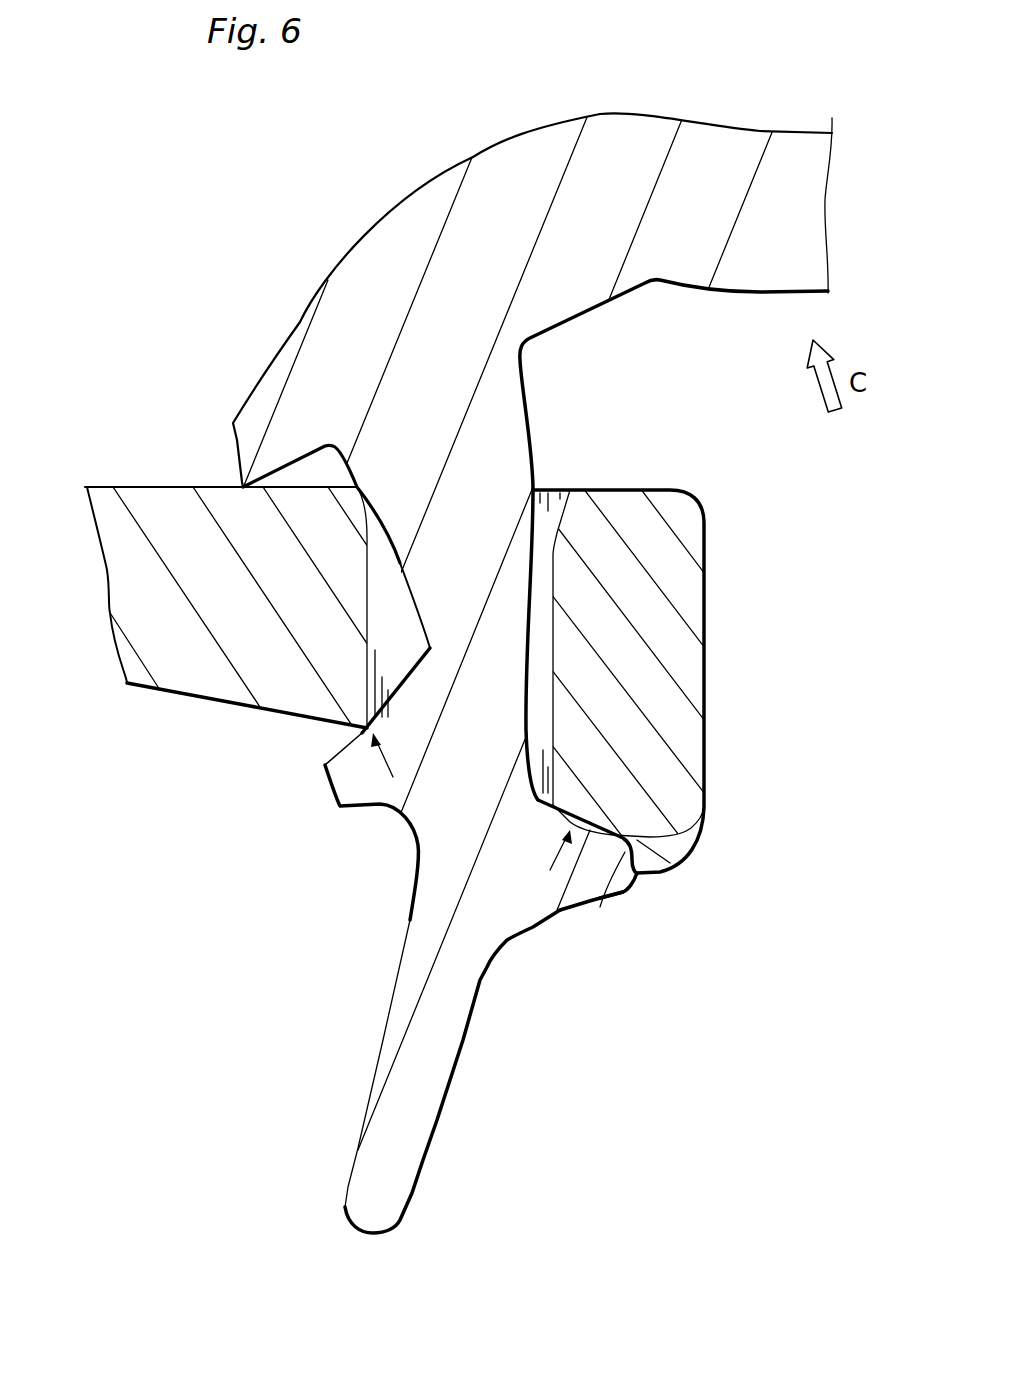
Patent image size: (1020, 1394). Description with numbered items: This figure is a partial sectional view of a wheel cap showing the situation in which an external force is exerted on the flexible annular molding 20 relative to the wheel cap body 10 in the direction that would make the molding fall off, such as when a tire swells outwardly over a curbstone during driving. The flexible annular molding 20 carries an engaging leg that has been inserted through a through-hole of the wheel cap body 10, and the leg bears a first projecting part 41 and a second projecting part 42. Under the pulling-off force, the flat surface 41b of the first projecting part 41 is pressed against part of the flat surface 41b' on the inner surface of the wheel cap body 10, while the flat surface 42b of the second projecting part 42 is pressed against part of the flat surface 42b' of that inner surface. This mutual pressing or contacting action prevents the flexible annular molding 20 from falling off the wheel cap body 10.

The flexible annular molding 20 is at (700, 82).
The wheel cap body 10 is at (74, 370).
The first projecting part 41 is at (325, 768).
The flat surface of first projecting part 41b is at (274, 780).
The flat surface of inner surface of wheel cap body 41b' is at (278, 705).
The second projecting part 42 is at (623, 887).
The flat surface of second projecting part 42b is at (585, 936).
The flat surface of inner surface of wheel cap body 42b' is at (662, 694).